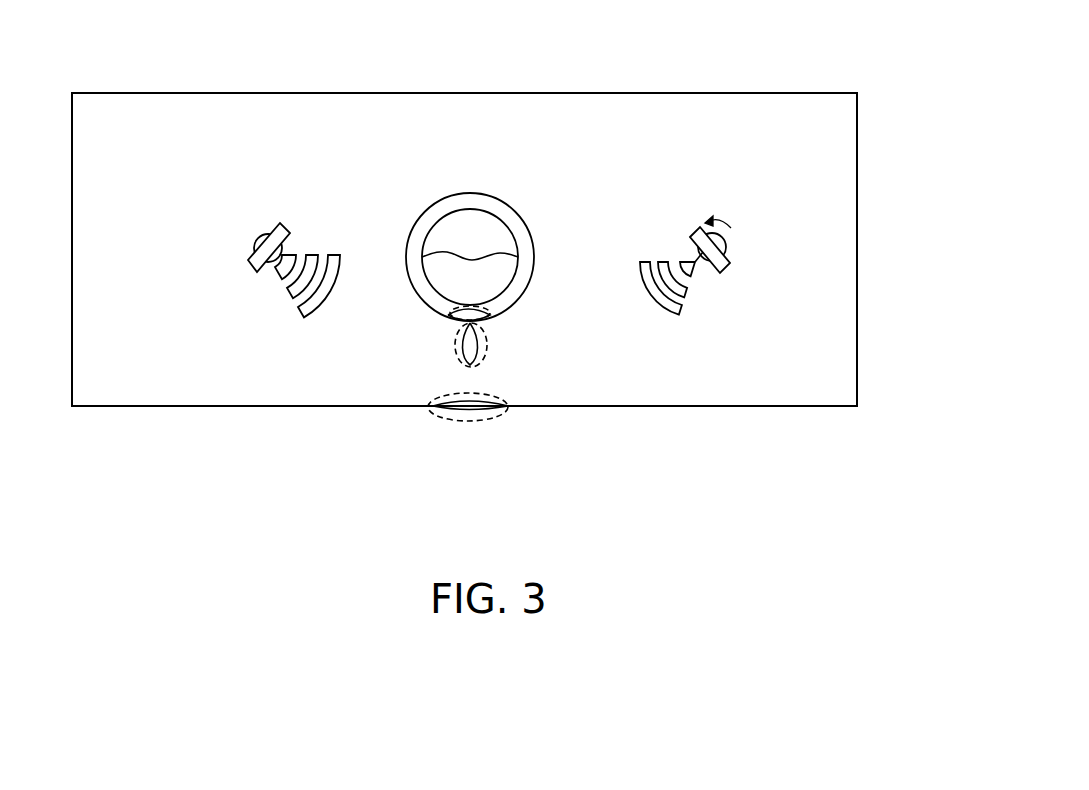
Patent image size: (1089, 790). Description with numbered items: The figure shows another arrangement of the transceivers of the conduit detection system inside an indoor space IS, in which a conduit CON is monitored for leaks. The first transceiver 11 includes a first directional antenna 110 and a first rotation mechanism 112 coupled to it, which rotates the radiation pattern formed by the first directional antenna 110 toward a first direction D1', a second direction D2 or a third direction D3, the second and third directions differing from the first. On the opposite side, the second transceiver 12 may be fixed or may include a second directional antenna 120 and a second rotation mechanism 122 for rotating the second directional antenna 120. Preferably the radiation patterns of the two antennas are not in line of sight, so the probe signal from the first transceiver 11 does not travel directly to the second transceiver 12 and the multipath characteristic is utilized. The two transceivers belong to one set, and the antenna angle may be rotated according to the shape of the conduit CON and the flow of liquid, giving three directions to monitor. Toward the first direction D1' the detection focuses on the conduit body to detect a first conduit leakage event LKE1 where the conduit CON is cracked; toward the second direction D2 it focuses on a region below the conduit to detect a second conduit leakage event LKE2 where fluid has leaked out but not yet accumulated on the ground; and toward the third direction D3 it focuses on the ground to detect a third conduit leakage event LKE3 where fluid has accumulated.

The indoor space IS is at (463, 92).
The conduit CON is at (468, 193).
The first conduit leakage event LKE1 is at (448, 315).
The second conduit leakage event LKE2 is at (455, 347).
The third conduit leakage event LKE3 is at (428, 410).
The first transceiver 11 is at (839, 281).
The first directional antenna 110 is at (730, 272).
The first rotation mechanism 112 is at (727, 245).
The second transceiver 12 is at (608, 327).
The second directional antenna 120 is at (250, 263).
The second rotation mechanism 122 is at (257, 239).
The first direction D1' is at (599, 259).
The second direction D2 is at (690, 266).
The third direction D3 is at (693, 266).